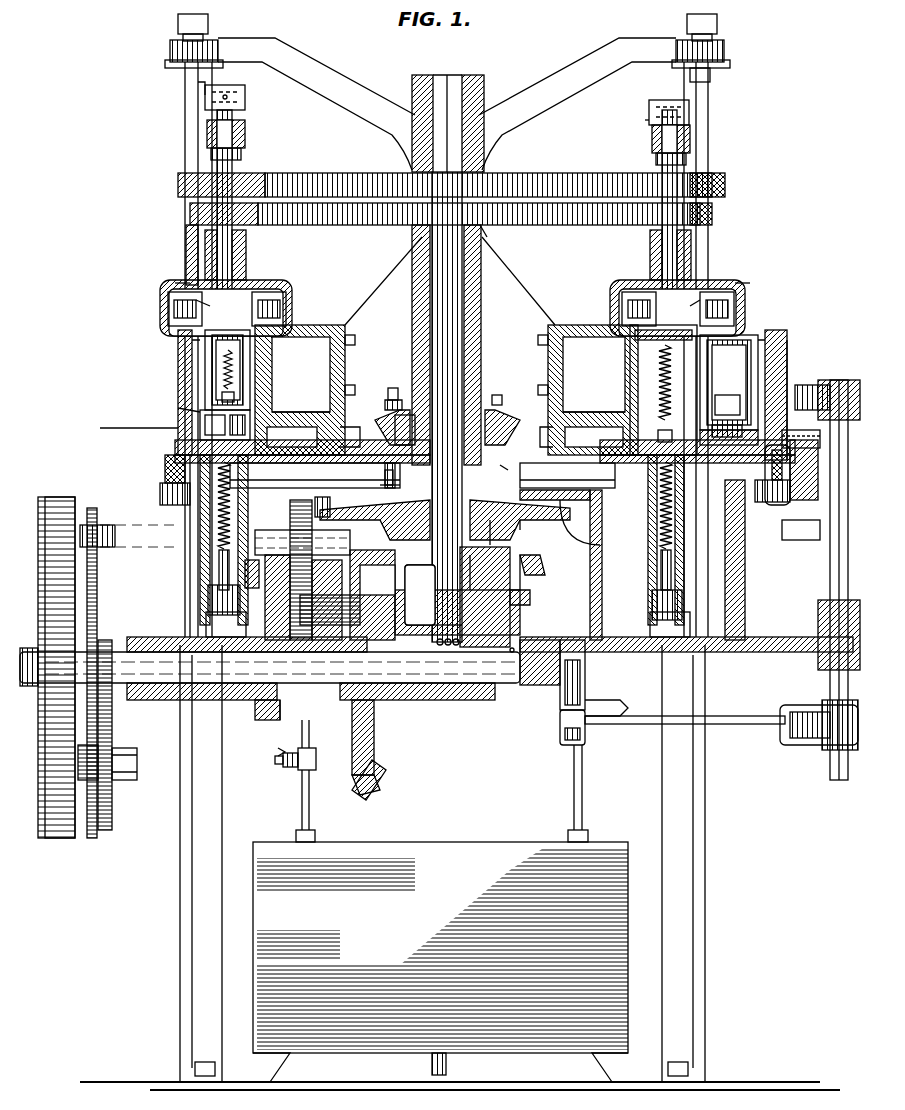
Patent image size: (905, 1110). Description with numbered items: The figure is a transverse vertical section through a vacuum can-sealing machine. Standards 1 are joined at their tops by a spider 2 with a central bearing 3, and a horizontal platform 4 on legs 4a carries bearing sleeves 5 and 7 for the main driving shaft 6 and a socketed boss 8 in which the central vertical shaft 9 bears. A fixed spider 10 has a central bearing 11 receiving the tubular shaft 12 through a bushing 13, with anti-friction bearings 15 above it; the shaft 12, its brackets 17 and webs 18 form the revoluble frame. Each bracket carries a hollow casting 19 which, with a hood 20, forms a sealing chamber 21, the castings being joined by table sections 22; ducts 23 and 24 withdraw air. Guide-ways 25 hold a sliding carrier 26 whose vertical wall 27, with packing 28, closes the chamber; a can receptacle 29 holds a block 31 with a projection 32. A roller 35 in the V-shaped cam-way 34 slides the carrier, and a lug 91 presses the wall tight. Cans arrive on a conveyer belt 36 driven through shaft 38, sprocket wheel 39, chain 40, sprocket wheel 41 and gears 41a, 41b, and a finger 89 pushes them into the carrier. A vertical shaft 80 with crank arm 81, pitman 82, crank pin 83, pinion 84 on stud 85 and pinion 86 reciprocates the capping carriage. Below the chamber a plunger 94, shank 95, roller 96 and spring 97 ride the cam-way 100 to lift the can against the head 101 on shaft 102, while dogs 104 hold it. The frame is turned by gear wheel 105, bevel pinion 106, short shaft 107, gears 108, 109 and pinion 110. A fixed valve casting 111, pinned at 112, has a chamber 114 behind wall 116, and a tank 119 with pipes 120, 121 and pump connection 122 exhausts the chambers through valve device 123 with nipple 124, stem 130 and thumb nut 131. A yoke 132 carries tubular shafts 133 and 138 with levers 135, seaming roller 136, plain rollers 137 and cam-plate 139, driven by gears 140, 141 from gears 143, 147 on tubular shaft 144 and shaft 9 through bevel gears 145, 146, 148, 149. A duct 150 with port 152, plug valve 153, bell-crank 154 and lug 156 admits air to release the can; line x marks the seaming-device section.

The standards 1 is at (185, 118).
The spider 2 is at (325, 60).
The bearing 3 is at (466, 80).
The horizontal platform 4 is at (250, 645).
The legs 4a is at (180, 892).
The bearing sleeve 5 is at (165, 690).
The main driving shaft 6 is at (247, 684).
The bearing sleeve 7 is at (462, 690).
The socketed boss 8 is at (470, 625).
The central vertical shaft 9 is at (470, 307).
The fixed spider 10 is at (385, 480).
The central bearing 11 is at (529, 531).
The vertical tubular shaft 12 is at (412, 307).
The bushing 13 is at (500, 532).
The anti-friction bearings 15 is at (519, 467).
The radial brackets 17 is at (357, 350).
The webs 18 is at (388, 272).
The hollow casting 19 is at (310, 328).
The hood 20 is at (290, 283).
The sealing chamber 21 is at (262, 375).
The segmental table sections 22 is at (139, 420).
The duct 23 is at (288, 412).
The duct 24 is at (446, 437).
The guide-ways 25 is at (422, 473).
The sliding carrier 26 is at (165, 463).
The vertical wall 27 is at (795, 325).
The packing 28 is at (787, 345).
The can receptacle 29 is at (192, 340).
The block 31 is at (200, 405).
The downward projection 32 is at (730, 445).
The V-shaped cam-way 34 is at (848, 492).
The roller 35 is at (160, 480).
The conveyer belt 36 is at (792, 483).
The shaft 38 is at (130, 527).
The sprocket wheel 39 is at (92, 510).
The sprocket chain 40 is at (80, 572).
The sprocket wheel 41 is at (839, 392).
The gear 41a is at (106, 830).
The gear 41b is at (110, 640).
The vertical shaft 80 is at (848, 545).
The crank arm 81 is at (812, 736).
The pitman 82 is at (728, 724).
The crank pin 83 is at (560, 725).
The pinion 84 is at (624, 700).
The stud 85 is at (585, 671).
The pinion 86 is at (516, 648).
The finger 89 is at (805, 390).
The lug or cam 91 is at (178, 410).
The plunger 94 is at (180, 447).
The shank 95 is at (200, 555).
The roller 96 is at (208, 600).
The spring 97 is at (190, 508).
The cam-way 100 is at (690, 627).
The head 101 is at (250, 350).
The shaft 102 is at (234, 244).
The spring-pressed dogs 104 is at (222, 397).
The gear wheel 105 is at (388, 525).
The bevel pinion 106 is at (328, 570).
The short shaft 107 is at (276, 523).
The gear 108 is at (300, 500).
The gear 109 is at (322, 507).
The pinion 110 is at (298, 690).
The hollow conical valve casting 111 is at (380, 420).
The pin 112 is at (352, 465).
The valve chamber 114 is at (510, 384).
The wall 116 is at (388, 400).
The tank 119 is at (440, 962).
The pipe 120 is at (584, 800).
The pipe 121 is at (312, 798).
The pump connection 122 is at (430, 1068).
The valve device 123 is at (322, 745).
The nipple 124 is at (288, 767).
The valve stem 130 is at (275, 760).
The thumb nut 131 is at (281, 744).
The yoke or frame 132 is at (242, 154).
The tubular shaft 133 is at (186, 238).
The levers 135 is at (168, 300).
The seaming roller 136 is at (174, 314).
The plain roller 137 is at (288, 300).
The tubular shaft 138 is at (246, 258).
The cam-plate 139 is at (178, 282).
The gear 140 is at (190, 210).
The gear 141 is at (178, 182).
The gear wheel 143 is at (575, 225).
The tubular shaft 144 is at (490, 247).
The bevel gear 145 is at (537, 570).
The bevel gear 146 is at (362, 572).
The gear 147 is at (325, 173).
The bevel gear 148 is at (530, 600).
The bevel gear 149 is at (386, 733).
The duct 150 is at (240, 119).
The port 152 is at (228, 86).
The plug valve 153 is at (228, 97).
The bell-crank-lever 154 is at (198, 90).
The lug 156 is at (712, 88).
The section line x— x is at (196, 300).